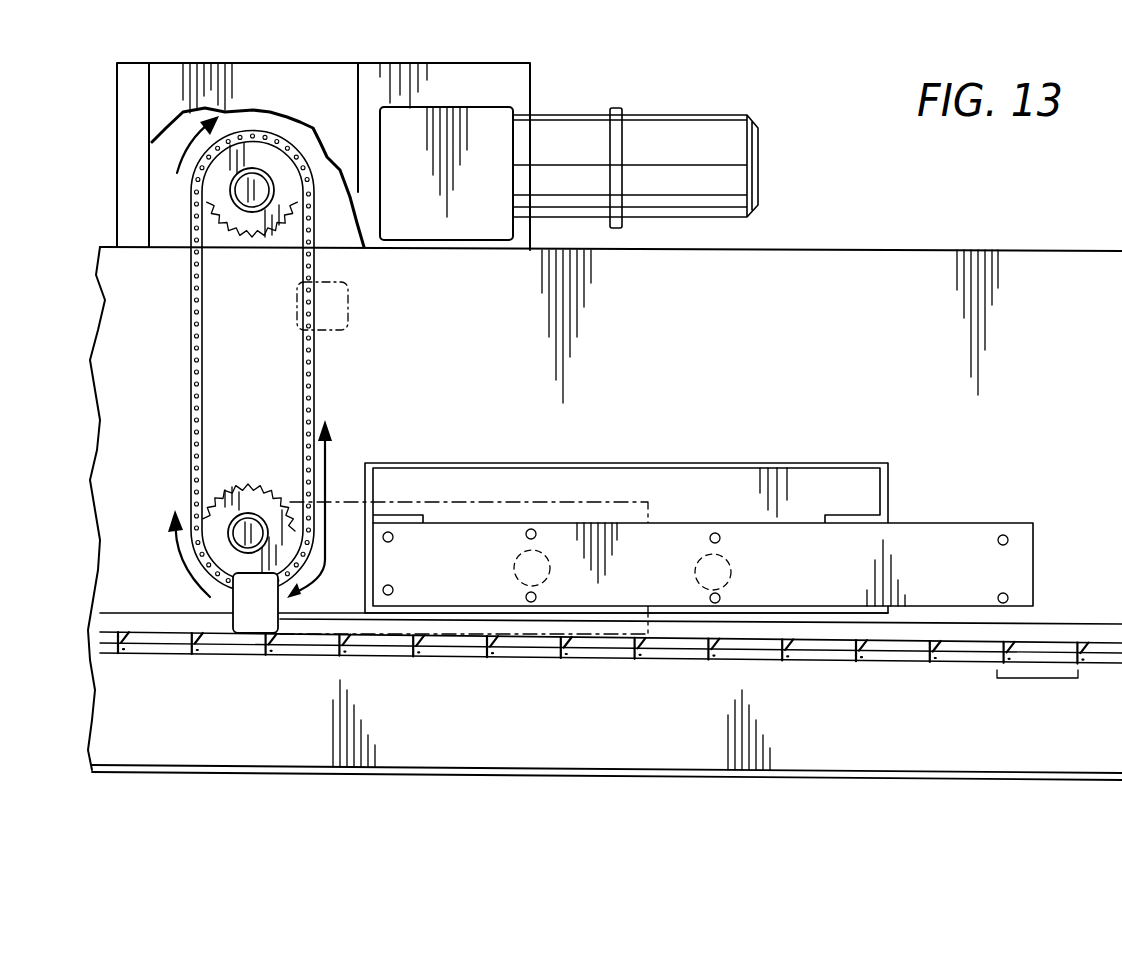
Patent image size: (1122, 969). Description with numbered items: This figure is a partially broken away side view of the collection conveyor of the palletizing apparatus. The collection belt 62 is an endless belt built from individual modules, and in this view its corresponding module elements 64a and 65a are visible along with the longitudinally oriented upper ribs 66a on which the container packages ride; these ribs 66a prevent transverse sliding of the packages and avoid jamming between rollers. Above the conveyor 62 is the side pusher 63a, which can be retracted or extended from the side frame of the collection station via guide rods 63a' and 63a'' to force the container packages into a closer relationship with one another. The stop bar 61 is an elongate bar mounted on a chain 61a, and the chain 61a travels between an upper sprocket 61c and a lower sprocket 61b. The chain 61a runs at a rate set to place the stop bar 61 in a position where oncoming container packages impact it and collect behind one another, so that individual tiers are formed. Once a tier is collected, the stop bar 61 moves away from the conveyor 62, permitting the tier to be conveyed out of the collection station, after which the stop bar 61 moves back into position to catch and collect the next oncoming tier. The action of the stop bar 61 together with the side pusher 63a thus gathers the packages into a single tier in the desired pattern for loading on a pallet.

The stop bar 61 is at (253, 603).
The chain 61a is at (315, 347).
The sprocket 61b is at (250, 500).
The sprocket 61c is at (250, 228).
The collection belt 62 is at (611, 643).
The side pusher 63a is at (703, 534).
The guide rod 63a' is at (491, 565).
The guide rod 63a'' is at (762, 567).
The belt module element 64a is at (1037, 678).
The belt module element 65a is at (908, 656).
The upper rib 66a is at (908, 646).